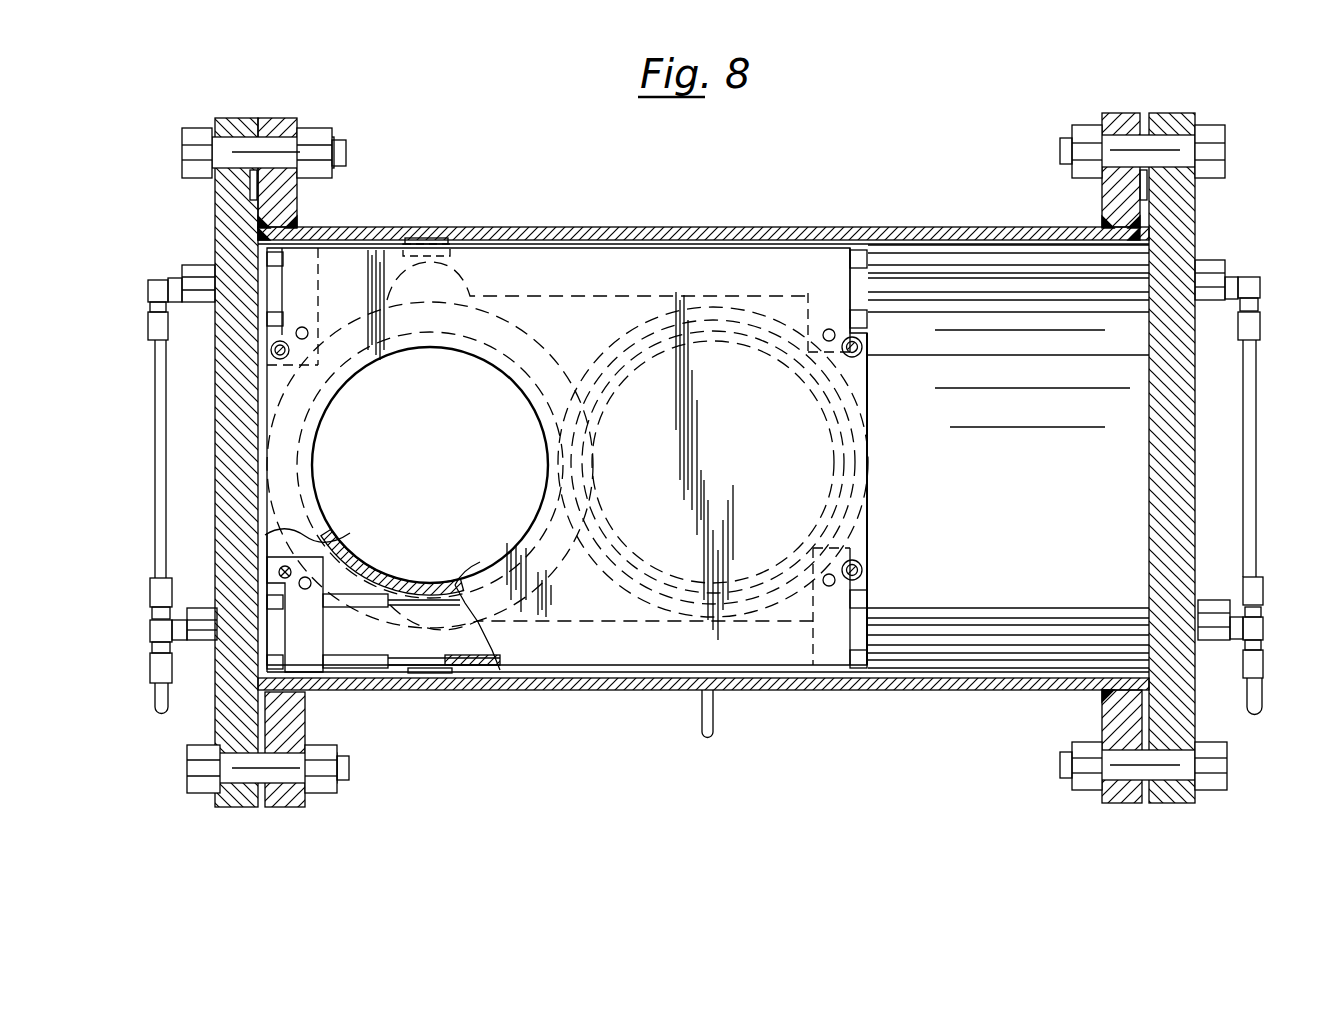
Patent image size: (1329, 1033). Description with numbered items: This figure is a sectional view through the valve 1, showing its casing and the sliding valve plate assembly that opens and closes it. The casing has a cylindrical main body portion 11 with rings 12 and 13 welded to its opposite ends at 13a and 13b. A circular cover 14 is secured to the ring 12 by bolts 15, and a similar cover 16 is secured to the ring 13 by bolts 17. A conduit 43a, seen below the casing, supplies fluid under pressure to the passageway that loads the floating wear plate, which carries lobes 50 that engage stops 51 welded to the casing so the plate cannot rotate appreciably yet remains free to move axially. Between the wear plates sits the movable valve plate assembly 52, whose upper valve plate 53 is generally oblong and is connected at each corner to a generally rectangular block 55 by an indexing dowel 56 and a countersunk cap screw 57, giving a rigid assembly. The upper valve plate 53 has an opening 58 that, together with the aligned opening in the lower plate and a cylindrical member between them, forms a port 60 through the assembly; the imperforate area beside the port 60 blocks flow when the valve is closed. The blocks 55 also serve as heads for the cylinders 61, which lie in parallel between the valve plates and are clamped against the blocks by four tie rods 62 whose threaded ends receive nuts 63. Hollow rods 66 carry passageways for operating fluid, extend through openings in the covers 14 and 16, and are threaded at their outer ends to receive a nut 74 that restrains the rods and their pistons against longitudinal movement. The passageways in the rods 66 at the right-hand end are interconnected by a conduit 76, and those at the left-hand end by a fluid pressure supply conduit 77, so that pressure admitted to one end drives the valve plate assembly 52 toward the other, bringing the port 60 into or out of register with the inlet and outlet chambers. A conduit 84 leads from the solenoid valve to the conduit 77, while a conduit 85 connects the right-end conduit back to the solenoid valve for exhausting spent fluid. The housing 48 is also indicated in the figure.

The valve 1 is at (904, 222).
The cylindrical main body portion 11 is at (752, 227).
The ring 12 is at (285, 118).
The ring 13 is at (1120, 113).
The weld 13a is at (300, 224).
The weld 13b is at (256, 230).
The circular cover 14 is at (247, 118).
The bolts 15 is at (346, 152).
The cover 16 is at (1170, 113).
The bolts 17 is at (1068, 148).
The conduit 43a is at (713, 712).
The housing 48 is at (610, 292).
The lobes 50 is at (478, 278).
The stops 51 is at (432, 240).
The movable valve plate assembly 52 is at (868, 436).
The upper valve plate 53 is at (600, 662).
The rectangular block 55 is at (868, 385).
The indexing dowel 56 is at (304, 327).
The countersunk cap screw 57 is at (270, 350).
The opening 58 is at (492, 372).
The port 60 is at (396, 578).
The cylinders 61 is at (442, 596).
The tie rods 62 is at (373, 592).
The nuts 63 is at (868, 318).
The rods 66 is at (170, 280).
The nut 74 is at (200, 268).
The conduit 76 is at (1256, 430).
The fluid pressure supply conduit 77 is at (154, 522).
The conduit 84 is at (156, 705).
The conduit 85 is at (1258, 690).